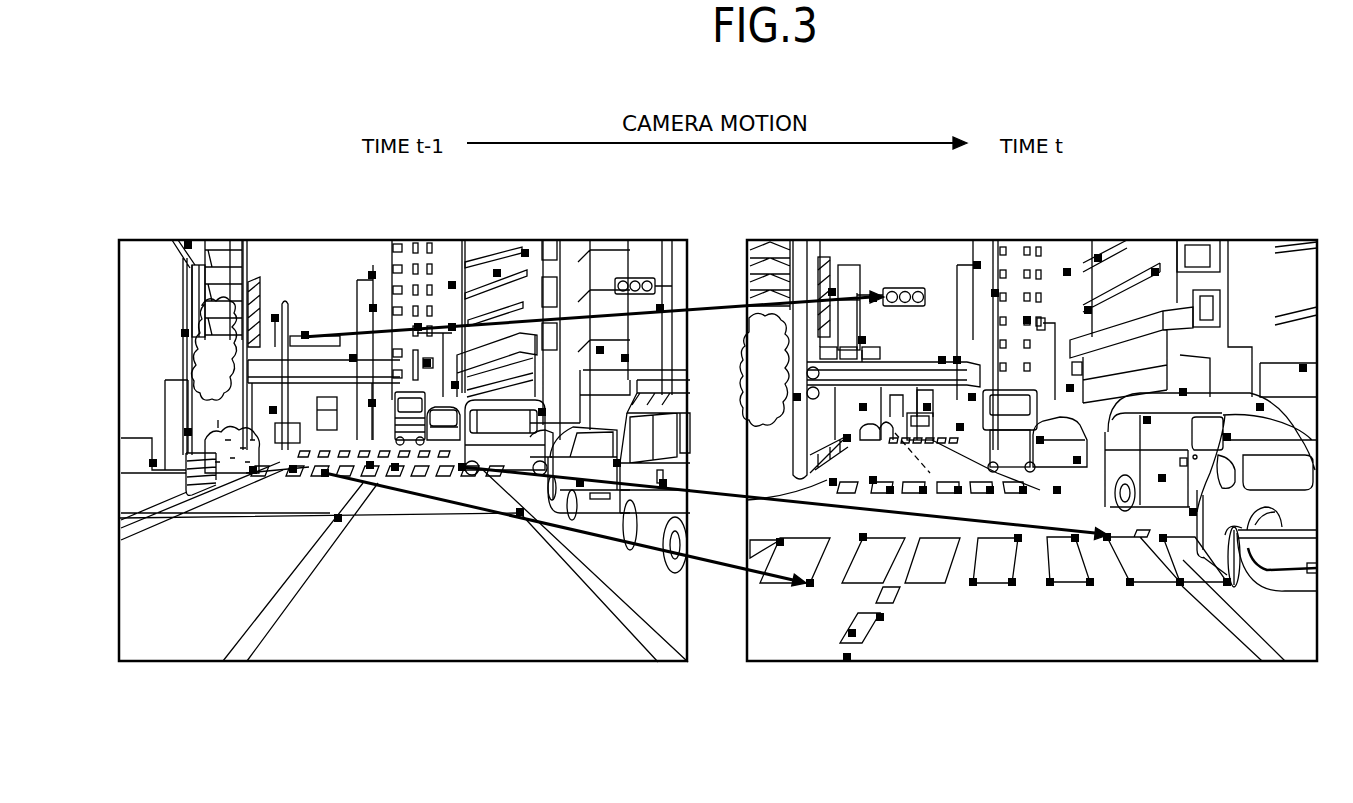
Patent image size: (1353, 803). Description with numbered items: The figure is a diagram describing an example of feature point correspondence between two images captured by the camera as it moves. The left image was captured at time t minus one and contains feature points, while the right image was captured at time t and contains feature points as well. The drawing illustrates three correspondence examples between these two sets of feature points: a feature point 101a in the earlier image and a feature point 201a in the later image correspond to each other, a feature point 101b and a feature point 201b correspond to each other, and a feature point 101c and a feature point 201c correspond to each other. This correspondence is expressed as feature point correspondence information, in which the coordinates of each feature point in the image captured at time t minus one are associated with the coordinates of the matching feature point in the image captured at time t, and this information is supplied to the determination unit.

The feature point 101a is at (303, 337).
The feature point 101b is at (325, 477).
The feature point 101c is at (462, 471).
The feature point 201a is at (880, 288).
The feature point 201b is at (810, 587).
The feature point 201c is at (1107, 541).